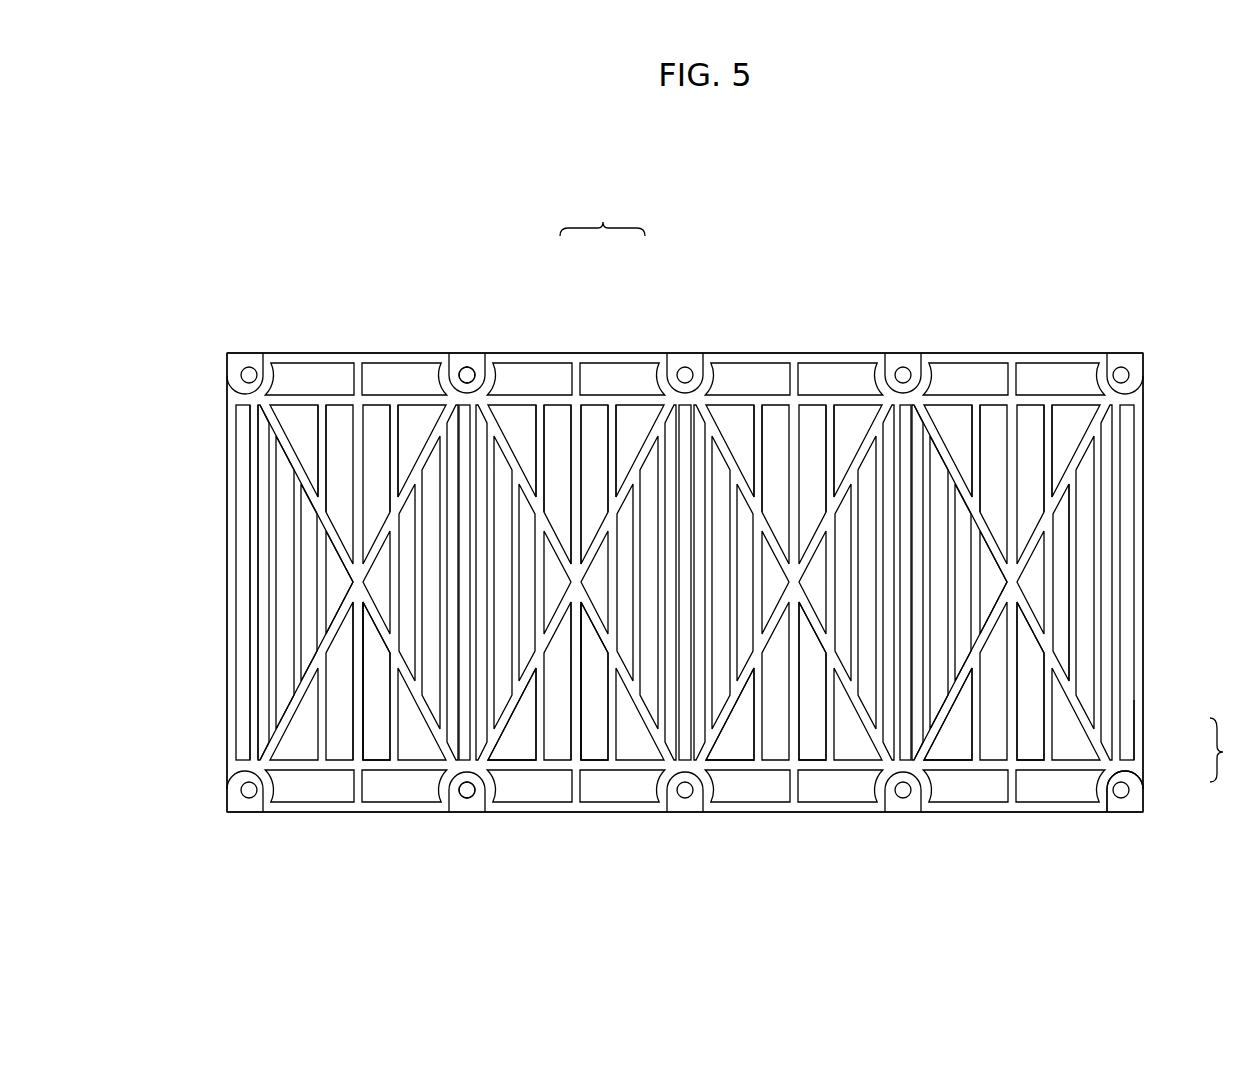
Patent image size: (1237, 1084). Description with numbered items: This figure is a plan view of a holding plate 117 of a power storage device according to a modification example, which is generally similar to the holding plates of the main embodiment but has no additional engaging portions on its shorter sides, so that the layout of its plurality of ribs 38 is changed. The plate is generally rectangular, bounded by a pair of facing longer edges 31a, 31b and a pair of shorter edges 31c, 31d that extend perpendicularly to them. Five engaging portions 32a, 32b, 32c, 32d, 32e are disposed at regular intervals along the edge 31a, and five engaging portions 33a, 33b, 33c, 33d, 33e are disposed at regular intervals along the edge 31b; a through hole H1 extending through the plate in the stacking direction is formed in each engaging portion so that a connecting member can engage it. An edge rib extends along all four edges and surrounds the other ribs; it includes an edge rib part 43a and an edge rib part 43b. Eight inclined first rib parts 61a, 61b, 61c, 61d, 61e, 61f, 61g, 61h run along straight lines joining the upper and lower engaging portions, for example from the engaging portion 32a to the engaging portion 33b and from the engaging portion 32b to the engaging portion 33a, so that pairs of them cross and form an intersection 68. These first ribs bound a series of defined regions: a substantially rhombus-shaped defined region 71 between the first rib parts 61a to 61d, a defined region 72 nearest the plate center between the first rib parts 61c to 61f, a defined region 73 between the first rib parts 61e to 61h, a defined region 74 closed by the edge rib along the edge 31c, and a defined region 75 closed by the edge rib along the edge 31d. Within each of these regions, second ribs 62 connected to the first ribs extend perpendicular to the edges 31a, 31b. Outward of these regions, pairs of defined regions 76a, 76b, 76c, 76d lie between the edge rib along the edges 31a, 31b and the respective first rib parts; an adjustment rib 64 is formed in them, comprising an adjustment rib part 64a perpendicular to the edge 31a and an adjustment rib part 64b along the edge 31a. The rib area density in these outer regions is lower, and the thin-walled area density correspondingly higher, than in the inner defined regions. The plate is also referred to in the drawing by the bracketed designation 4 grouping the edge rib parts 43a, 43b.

The holding plate 117 is at (1158, 348).
The frame side portion 4 is at (1223, 750).
The edge 31a is at (305, 353).
The edge 31b is at (310, 812).
The edge 31c is at (227, 582).
The edge 31d is at (1143, 513).
The engaging portion 32a is at (244, 356).
The engaging portion 32b is at (470, 353).
The engaging portion 32c is at (690, 353).
The engaging portion 32d is at (905, 353).
The engaging portion 32e is at (1118, 353).
The engaging portion 33a is at (243, 815).
The engaging portion 33b is at (472, 815).
The engaging portion 33c is at (685, 815).
The engaging portion 33d is at (902, 815).
The engaging portion 33e is at (1120, 815).
The ribs 38 is at (1100, 638).
The edge rib part 43a is at (1143, 778).
The edge rib part 43b is at (1134, 722).
The first rib part 61a is at (322, 455).
The first rib part 61b is at (379, 500).
The first rib part 61c is at (556, 498).
The first rib part 61d is at (640, 450).
The first rib part 61e is at (776, 500).
The first rib part 61f is at (850, 450).
The first rib part 61g is at (996, 498).
The first rib part 61h is at (1072, 450).
The second ribs 62 is at (935, 515).
The adjustment rib 64 is at (602, 218).
The adjustment rib part 64a is at (587, 445).
The adjustment rib part 64b is at (620, 445).
The intersection 68 is at (1035, 558).
The defined region 71 is at (490, 745).
The defined region 72 is at (703, 686).
The defined region 73 is at (923, 676).
The defined region 74 is at (262, 541).
The defined region 75 is at (1112, 580).
The defined regions 76a is at (383, 740).
The defined regions 76b is at (590, 742).
The defined regions 76c is at (805, 742).
The defined regions 76d is at (1025, 742).
The through hole H1 is at (467, 366).